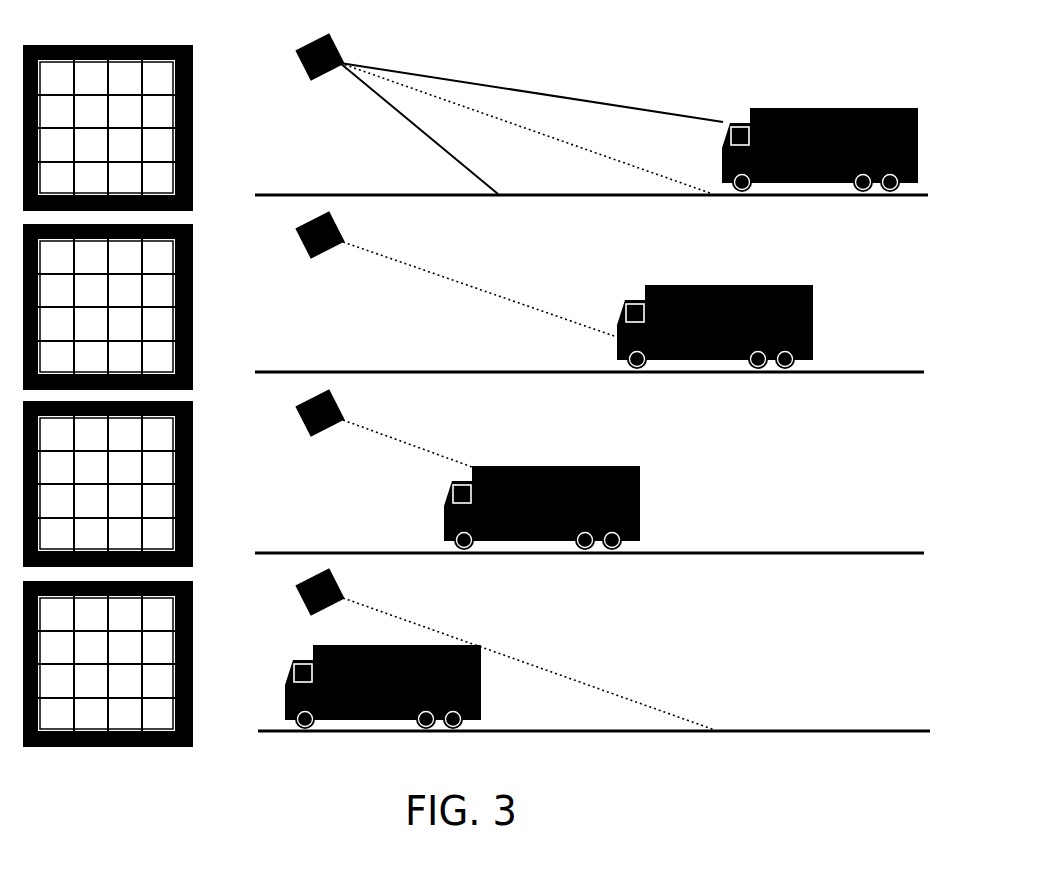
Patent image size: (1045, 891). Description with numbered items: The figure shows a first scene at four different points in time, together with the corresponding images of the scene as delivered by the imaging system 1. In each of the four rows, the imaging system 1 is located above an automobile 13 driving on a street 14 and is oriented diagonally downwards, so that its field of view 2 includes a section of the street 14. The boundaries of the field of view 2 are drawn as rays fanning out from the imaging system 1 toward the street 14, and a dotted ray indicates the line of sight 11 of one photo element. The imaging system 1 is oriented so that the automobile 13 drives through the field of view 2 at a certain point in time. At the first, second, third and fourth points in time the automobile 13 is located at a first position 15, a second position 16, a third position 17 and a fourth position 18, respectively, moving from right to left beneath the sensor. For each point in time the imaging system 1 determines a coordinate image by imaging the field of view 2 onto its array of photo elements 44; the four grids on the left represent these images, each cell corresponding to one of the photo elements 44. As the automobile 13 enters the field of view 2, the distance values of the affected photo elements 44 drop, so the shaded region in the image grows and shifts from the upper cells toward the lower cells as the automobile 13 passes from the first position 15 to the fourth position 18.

The imaging system 1 is at (332, 40).
The field of view 2 is at (508, 86).
The line of sight 11 is at (556, 138).
The automobile 13 is at (813, 108).
The street 14 is at (878, 198).
The first position 15 is at (292, 185).
The second position 16 is at (302, 362).
The third position 17 is at (296, 544).
The fourth position 18 is at (878, 724).
The photo elements 44 is at (160, 62).